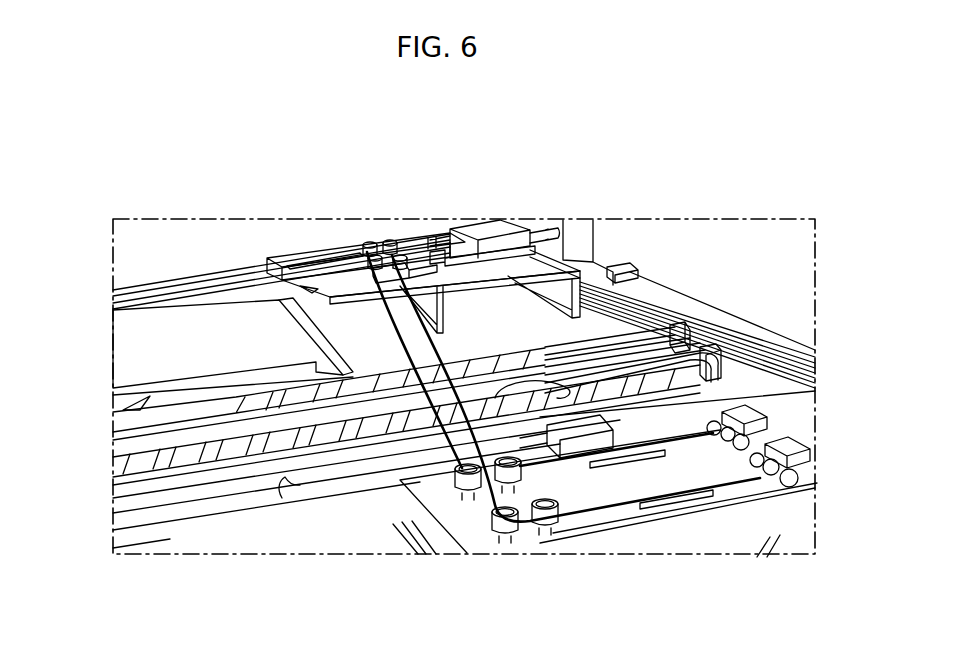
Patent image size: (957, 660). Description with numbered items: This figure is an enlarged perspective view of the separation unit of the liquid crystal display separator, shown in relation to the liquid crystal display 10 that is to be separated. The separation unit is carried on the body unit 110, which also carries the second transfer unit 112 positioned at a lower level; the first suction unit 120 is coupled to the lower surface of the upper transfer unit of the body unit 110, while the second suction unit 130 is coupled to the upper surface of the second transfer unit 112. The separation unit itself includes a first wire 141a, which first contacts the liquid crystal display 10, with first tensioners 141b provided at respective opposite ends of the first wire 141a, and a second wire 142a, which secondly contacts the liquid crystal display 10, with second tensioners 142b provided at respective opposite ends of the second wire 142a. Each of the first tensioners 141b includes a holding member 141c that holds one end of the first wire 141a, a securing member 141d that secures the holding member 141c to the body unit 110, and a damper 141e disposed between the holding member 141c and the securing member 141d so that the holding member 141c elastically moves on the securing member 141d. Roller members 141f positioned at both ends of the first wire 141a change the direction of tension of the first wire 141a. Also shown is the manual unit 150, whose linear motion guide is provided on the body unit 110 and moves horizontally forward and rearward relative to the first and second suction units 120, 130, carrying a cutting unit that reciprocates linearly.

The liquid crystal display 10 is at (124, 409).
The body unit 110 is at (628, 542).
The second transfer unit 112 is at (197, 458).
The first suction unit 120 is at (231, 302).
The second suction unit 130 is at (289, 305).
The first wire 141a is at (398, 328).
The first tensioners 141b is at (462, 223).
The holding member 141c is at (797, 490).
The securing member 141d is at (481, 228).
The damper 141e is at (544, 238).
The roller members 141f is at (510, 512).
The second wire 142a is at (437, 343).
The second tensioners 142b is at (508, 238).
The manual unit 150 is at (588, 420).